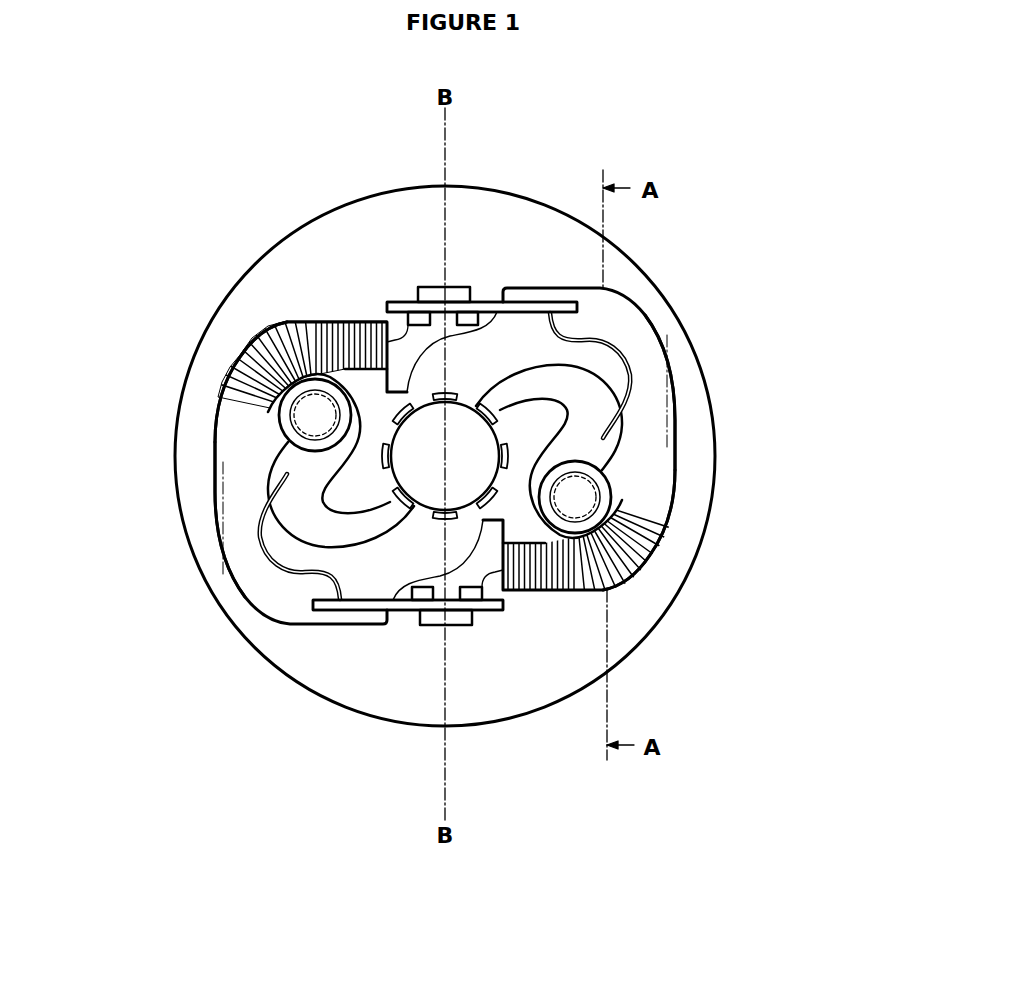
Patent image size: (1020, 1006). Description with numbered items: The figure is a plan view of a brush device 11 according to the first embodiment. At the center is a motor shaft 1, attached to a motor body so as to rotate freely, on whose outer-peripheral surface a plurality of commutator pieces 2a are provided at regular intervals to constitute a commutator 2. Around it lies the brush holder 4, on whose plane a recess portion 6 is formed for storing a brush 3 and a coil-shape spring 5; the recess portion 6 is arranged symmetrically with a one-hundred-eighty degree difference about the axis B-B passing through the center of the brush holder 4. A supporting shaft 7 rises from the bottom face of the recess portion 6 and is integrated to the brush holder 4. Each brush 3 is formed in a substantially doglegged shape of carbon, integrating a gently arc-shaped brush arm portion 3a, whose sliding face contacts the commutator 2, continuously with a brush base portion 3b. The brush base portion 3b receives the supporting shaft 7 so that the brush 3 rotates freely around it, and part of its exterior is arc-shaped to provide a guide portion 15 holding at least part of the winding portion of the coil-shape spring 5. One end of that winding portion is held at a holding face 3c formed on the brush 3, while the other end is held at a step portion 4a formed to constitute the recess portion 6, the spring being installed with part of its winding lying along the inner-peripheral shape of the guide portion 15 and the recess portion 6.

The motor shaft 1 is at (368, 338).
The commutator 2 is at (453, 374).
The commutator pieces 2a is at (380, 458).
The brush 3 is at (600, 365).
The brush arm portion 3a is at (520, 393).
The brush base portion 3b is at (637, 482).
The holding face 3c is at (228, 355).
The brush holder 4 is at (625, 613).
The step portion 4a is at (414, 304).
The coil-shape spring 5 is at (300, 330).
The recess portion 6 is at (370, 572).
The supporting shaft 7 is at (576, 497).
The brush device 11 is at (722, 596).
The guide portion 15 is at (605, 510).